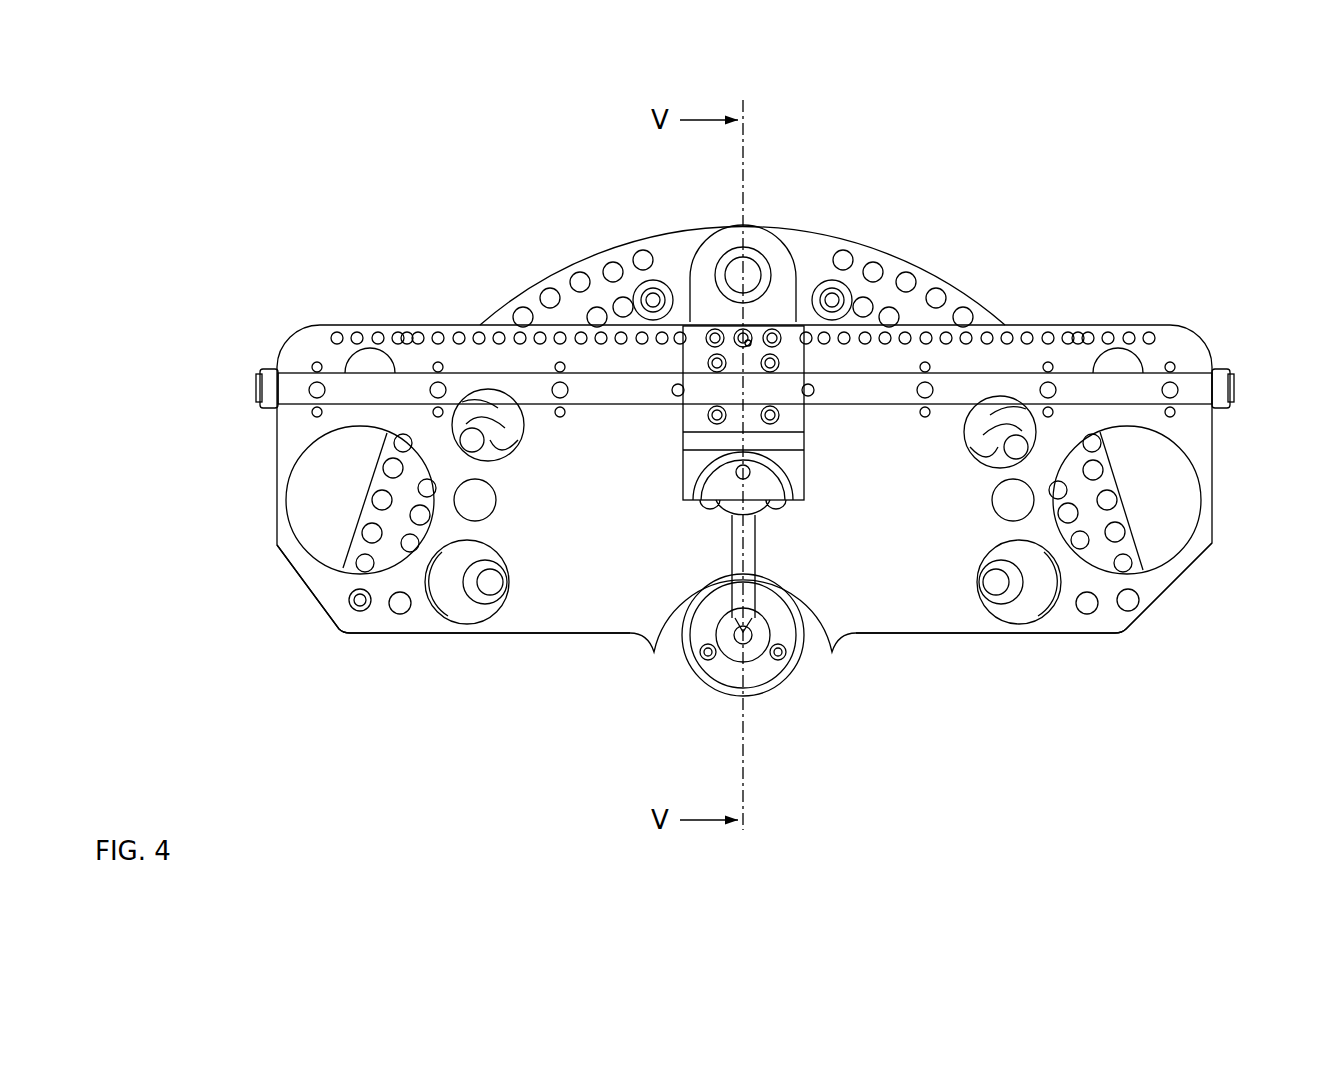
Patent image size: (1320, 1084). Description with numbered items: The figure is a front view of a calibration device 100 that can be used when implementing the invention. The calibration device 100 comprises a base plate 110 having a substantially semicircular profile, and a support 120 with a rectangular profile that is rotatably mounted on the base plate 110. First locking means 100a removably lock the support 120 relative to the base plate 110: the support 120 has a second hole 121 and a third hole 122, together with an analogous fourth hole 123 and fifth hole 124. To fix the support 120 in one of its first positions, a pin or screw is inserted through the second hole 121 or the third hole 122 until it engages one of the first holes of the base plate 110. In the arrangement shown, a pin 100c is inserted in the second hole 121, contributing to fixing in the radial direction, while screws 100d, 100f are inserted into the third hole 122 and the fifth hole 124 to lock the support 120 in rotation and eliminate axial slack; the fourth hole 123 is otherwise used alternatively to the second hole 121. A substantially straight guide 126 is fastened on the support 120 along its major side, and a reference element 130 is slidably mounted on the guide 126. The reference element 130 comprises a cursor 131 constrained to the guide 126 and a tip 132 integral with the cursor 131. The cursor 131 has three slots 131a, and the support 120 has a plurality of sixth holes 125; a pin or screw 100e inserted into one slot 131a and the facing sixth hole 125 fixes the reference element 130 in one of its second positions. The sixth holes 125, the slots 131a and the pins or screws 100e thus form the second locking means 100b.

The calibration device 100 is at (566, 783).
The first locking means 100a is at (627, 288).
The second locking means 100b is at (407, 327).
The pin 100c is at (357, 603).
The screw 100d is at (652, 298).
The pin or screw 100e is at (760, 350).
The screw 100f is at (830, 298).
The base plate 110 is at (489, 296).
The support 120 is at (291, 571).
The second hole 121 is at (360, 605).
The third hole 122 is at (632, 293).
The fourth hole 123 is at (1128, 607).
The fifth hole 124 is at (837, 287).
The sixth holes 125 is at (320, 336).
The guide 126 is at (1000, 392).
The reference element 130 is at (672, 497).
The cursor 131 is at (793, 400).
The slots 131a is at (772, 331).
The tip 132 is at (752, 540).